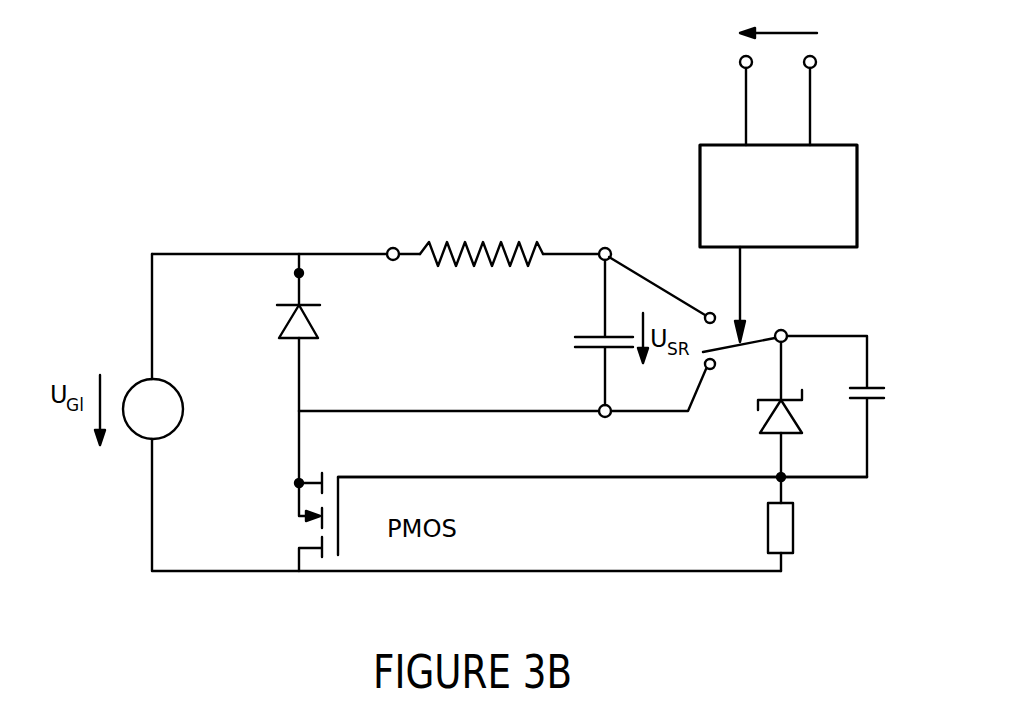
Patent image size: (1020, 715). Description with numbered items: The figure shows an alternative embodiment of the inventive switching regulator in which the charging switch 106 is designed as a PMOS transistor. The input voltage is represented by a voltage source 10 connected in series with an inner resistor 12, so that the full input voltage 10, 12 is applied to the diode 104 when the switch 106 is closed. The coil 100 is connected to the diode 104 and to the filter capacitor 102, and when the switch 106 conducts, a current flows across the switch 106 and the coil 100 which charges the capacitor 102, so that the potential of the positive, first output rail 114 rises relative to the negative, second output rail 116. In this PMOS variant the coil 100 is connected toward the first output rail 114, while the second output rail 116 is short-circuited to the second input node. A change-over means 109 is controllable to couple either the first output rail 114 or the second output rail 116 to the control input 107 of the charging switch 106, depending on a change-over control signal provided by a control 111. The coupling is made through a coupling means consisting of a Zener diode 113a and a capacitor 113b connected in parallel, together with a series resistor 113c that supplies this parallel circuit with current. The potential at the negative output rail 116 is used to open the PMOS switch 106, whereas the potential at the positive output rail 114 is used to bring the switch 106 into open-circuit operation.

The voltage source 10 is at (183, 392).
The inner resistor 12 is at (183, 392).
The coil 100 is at (478, 266).
The filter capacitor 102 is at (574, 342).
The diode 104 is at (318, 338).
The charging switch 106 is at (308, 555).
The control input 107 is at (527, 478).
The change-over means 109 is at (762, 334).
The control 111 is at (857, 195).
The Zener diode 113a is at (797, 405).
The capacitor 113b is at (884, 385).
The series resistor 113c is at (790, 555).
The first output rail 114 is at (610, 248).
The second output rail 116 is at (609, 417).